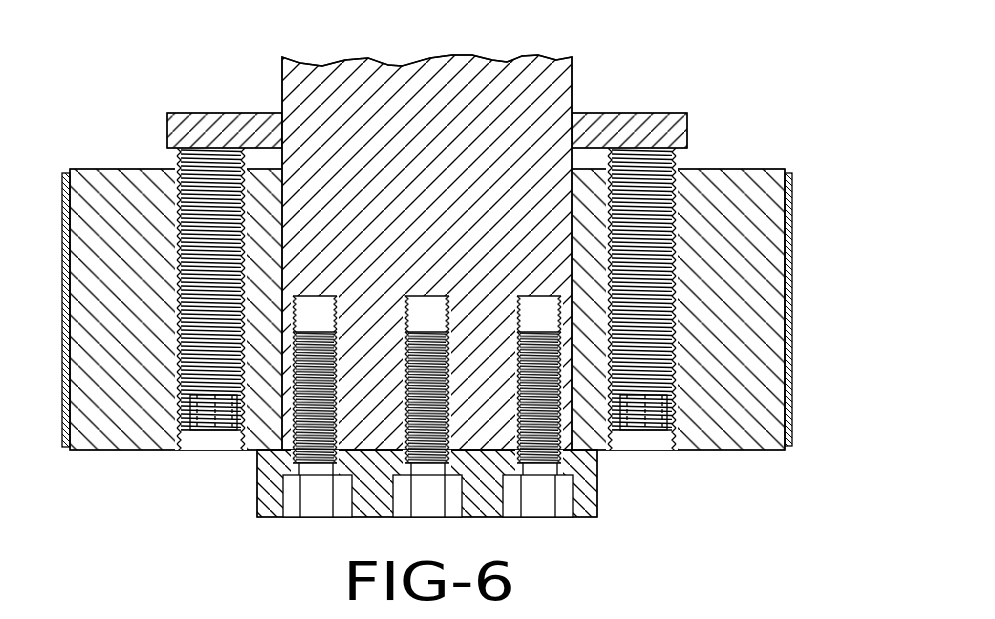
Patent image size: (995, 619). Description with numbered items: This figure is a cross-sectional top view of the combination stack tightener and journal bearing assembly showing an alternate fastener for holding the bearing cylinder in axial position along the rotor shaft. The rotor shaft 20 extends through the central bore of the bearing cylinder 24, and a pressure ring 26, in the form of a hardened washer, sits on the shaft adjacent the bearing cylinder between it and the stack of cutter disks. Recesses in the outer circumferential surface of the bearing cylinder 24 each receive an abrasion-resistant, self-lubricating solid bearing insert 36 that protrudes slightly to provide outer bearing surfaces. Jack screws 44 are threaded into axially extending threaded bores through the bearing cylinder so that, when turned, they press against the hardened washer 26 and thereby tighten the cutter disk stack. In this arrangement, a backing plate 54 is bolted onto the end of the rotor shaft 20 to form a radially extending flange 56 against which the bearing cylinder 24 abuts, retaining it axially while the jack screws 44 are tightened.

The rotor shaft 20 is at (346, 83).
The bearing cylinder 24 is at (726, 190).
The pressure ring 26 is at (618, 128).
The bearing insert 36 is at (792, 262).
The jack screw 44 is at (215, 428).
The backing plate 54 is at (275, 500).
The radially extending flange 56 is at (587, 442).